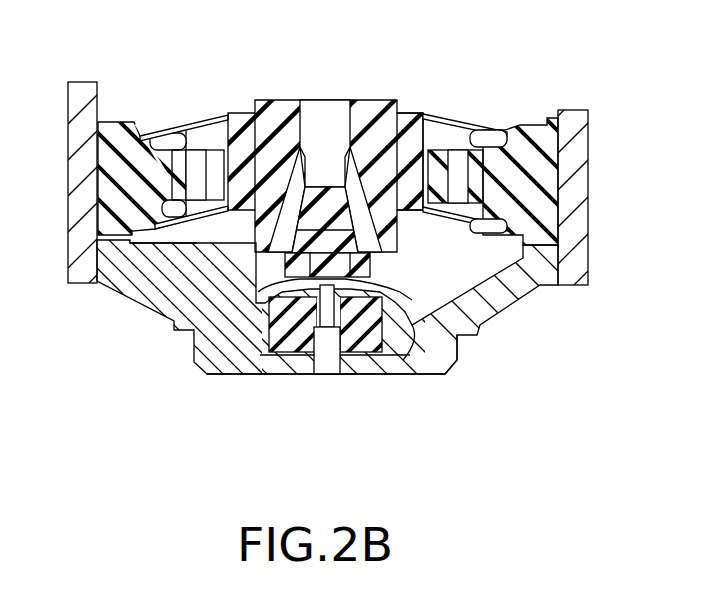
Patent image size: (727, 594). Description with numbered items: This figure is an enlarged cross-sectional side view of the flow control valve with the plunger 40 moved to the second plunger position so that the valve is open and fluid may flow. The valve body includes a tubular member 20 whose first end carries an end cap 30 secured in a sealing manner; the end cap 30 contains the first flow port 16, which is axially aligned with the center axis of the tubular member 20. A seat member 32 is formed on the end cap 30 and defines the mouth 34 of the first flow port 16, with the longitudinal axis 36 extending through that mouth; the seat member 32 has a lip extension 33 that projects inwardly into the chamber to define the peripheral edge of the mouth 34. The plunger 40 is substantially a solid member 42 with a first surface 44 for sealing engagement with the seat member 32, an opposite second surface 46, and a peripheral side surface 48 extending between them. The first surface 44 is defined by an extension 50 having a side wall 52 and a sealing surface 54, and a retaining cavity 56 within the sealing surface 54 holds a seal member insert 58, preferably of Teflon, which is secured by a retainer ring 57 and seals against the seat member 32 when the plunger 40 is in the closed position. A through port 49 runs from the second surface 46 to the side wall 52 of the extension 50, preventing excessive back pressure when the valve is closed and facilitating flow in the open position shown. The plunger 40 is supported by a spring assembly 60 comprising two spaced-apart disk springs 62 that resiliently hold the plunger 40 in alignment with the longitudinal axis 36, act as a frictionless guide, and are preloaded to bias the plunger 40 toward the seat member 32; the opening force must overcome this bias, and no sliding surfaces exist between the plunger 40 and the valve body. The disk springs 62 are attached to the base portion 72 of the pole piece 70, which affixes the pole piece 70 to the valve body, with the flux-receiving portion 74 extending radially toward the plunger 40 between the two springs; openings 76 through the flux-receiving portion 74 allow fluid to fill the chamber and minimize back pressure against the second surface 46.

The first flow port 16 is at (326, 358).
The tubular member 20 is at (588, 189).
The end cap 30 is at (365, 377).
The seat member 32 is at (268, 355).
The lip extension 33 is at (270, 330).
The mouth 34 is at (403, 358).
The longitudinal axis 36 is at (325, 374).
The plunger 40 is at (412, 99).
The solid member 42 is at (380, 104).
The first surface 44 is at (428, 217).
The second surface 46 is at (273, 99).
The peripheral side surface 48 is at (433, 130).
The through port 49 is at (335, 110).
The extension 50 is at (409, 265).
The side wall 52 is at (261, 244).
The sealing surface 54 is at (458, 355).
The retaining cavity 56 is at (254, 258).
The retainer ring 57 is at (267, 285).
The seal member insert 58 is at (264, 305).
The spring assembly 60 is at (503, 105).
The disk spring 62 is at (483, 131).
The pole piece 70 is at (96, 172).
The base portion 72 is at (121, 120).
The flux-receiving portion 74 is at (205, 128).
The openings 76 is at (197, 150).